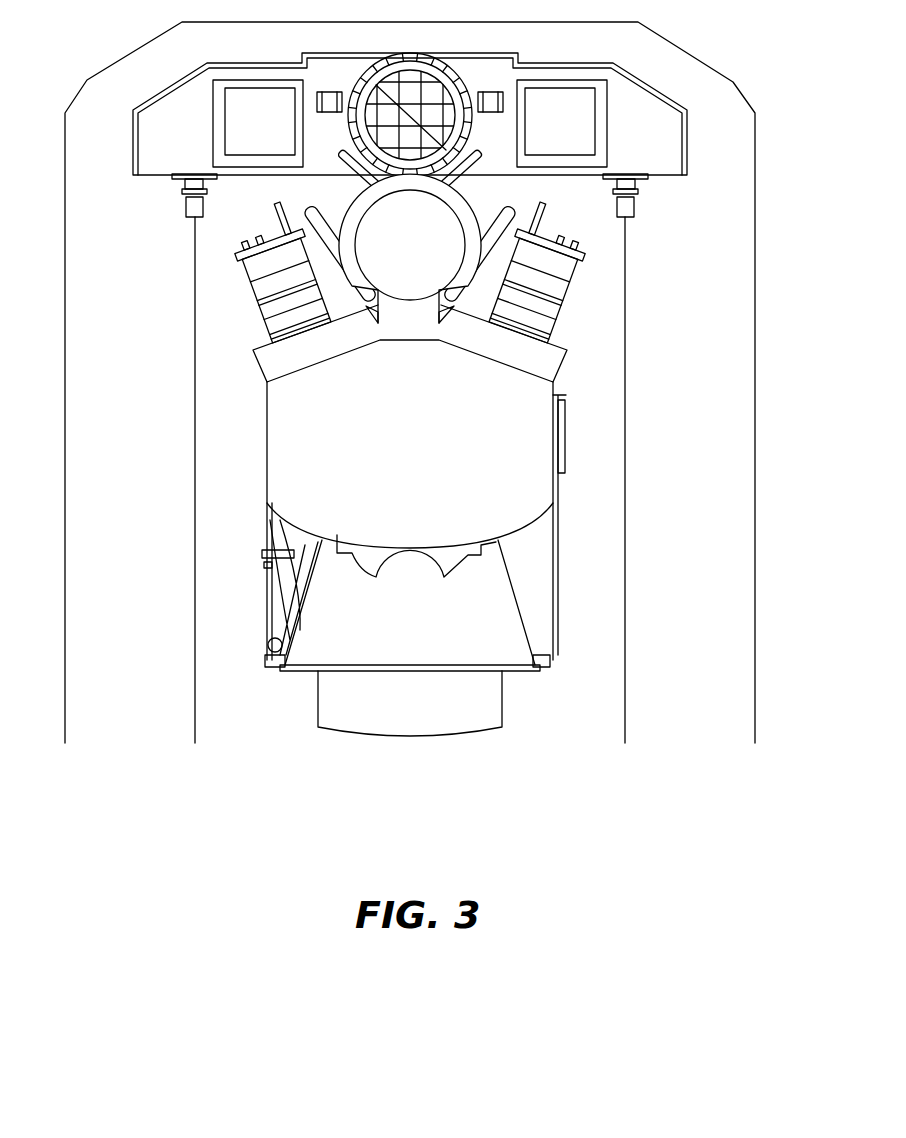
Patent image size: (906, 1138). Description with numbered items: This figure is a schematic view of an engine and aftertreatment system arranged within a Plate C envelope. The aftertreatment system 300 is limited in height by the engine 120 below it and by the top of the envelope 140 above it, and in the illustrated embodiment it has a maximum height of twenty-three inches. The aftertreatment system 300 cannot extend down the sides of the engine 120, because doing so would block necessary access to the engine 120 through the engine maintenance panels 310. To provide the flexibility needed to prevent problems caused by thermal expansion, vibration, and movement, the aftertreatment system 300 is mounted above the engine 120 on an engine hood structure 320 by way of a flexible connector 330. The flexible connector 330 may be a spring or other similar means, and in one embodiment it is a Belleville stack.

The engine 120 is at (412, 442).
The envelope 140 is at (683, 50).
The aftertreatment system 300 is at (154, 118).
The engine maintenance panels 310 is at (412, 271).
The engine hood structure 320 is at (195, 305).
The flexible connector 330 is at (186, 207).